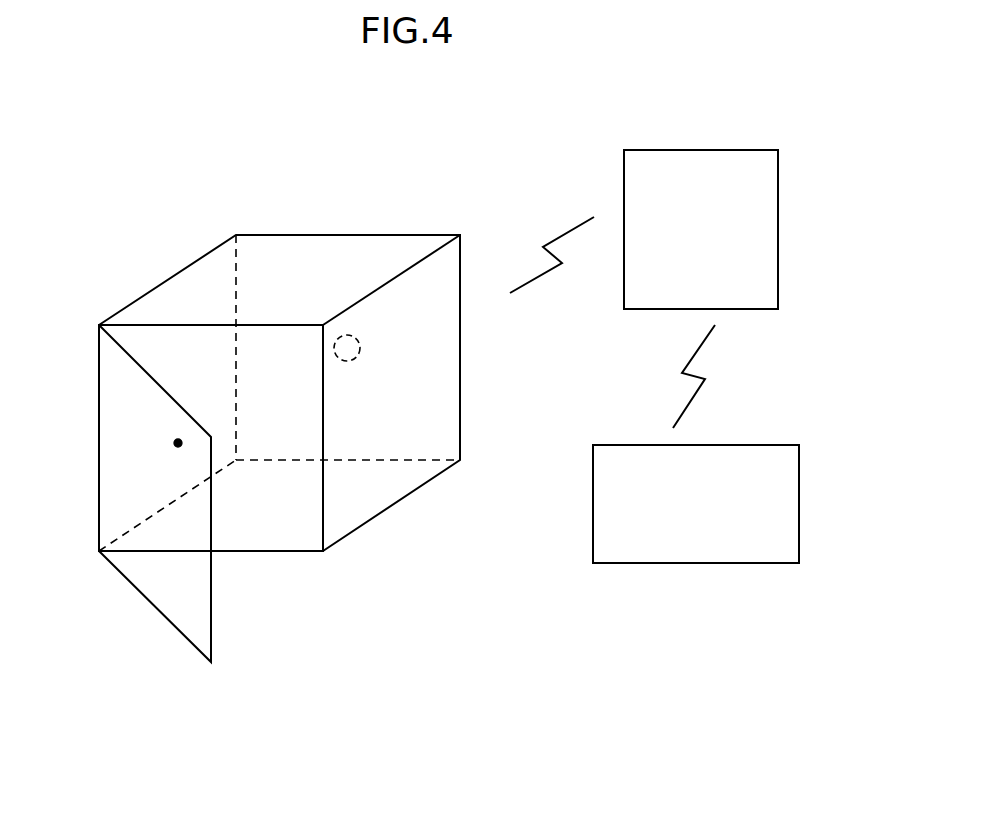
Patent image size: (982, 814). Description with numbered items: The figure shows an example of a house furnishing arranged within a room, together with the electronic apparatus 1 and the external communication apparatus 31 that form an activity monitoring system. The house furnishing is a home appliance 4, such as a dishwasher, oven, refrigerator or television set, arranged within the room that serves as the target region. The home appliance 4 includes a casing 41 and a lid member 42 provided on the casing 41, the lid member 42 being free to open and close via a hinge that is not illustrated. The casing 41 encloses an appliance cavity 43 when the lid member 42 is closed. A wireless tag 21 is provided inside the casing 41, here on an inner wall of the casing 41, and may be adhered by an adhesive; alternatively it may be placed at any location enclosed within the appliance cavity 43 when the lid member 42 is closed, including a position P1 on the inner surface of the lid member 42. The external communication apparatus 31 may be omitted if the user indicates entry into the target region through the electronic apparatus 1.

The home appliance 4 is at (427, 121).
The electronic apparatus 1 is at (729, 150).
The external communication apparatus 31 is at (757, 445).
The wireless tag 21 is at (347, 335).
The casing 41 is at (462, 345).
The lid member 42 is at (195, 618).
The appliance cavity 43 is at (288, 412).
The position on inner surface of lid member P1 is at (182, 438).